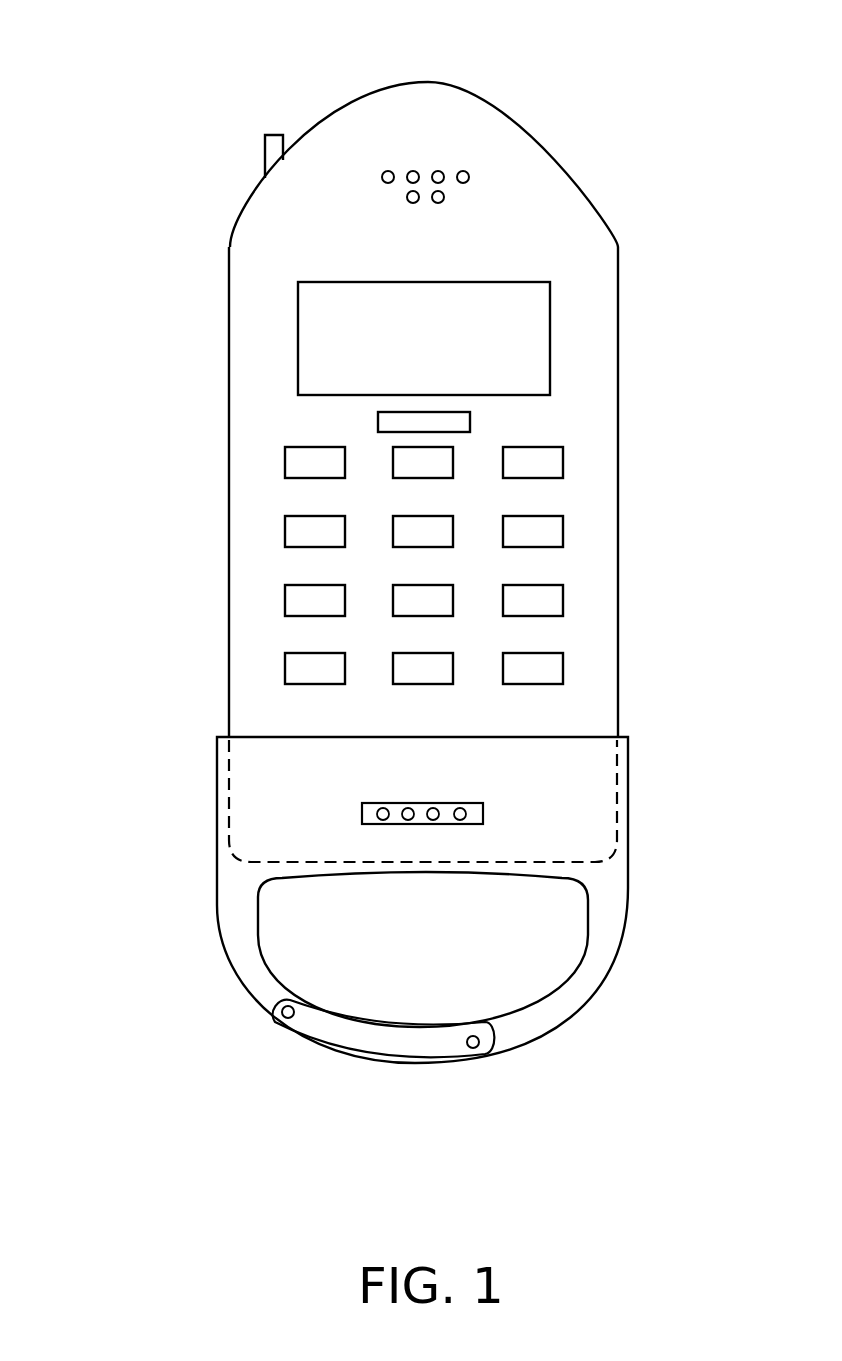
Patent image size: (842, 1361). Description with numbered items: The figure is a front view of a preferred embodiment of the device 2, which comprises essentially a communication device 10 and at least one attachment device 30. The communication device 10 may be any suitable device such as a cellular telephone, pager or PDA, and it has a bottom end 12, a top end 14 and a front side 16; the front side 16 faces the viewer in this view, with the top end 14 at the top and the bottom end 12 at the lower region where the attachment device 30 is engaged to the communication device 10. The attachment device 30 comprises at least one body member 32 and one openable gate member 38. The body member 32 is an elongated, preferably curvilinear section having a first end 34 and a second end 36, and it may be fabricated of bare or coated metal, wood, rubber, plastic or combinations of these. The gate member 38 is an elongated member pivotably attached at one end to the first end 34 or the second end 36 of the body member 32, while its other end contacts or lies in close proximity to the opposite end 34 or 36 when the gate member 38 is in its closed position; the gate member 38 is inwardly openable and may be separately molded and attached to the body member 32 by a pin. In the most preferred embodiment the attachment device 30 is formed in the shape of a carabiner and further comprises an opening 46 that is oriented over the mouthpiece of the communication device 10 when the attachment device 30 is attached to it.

The device 2 is at (119, 567).
The communication device 10 is at (590, 517).
The bottom end 12 is at (245, 862).
The top end 14 is at (362, 100).
The front side 16 is at (270, 390).
The attachment device 30 is at (587, 815).
The body member 32 is at (593, 957).
The first end 34 is at (497, 1035).
The second end 36 is at (270, 1003).
The gate member 38 is at (368, 1047).
The opening 46 is at (362, 810).